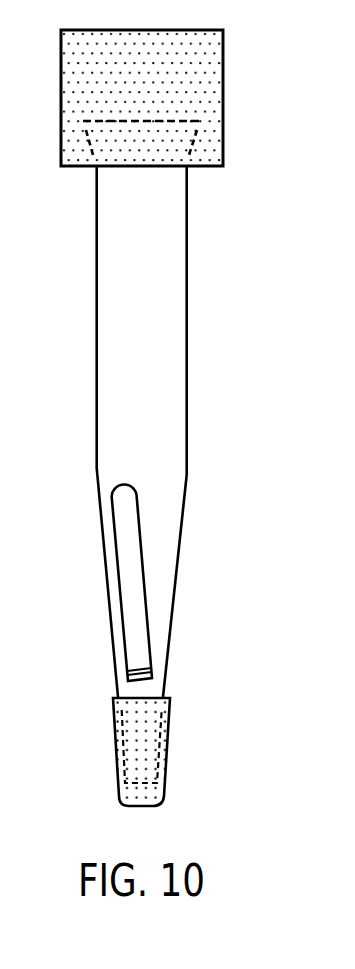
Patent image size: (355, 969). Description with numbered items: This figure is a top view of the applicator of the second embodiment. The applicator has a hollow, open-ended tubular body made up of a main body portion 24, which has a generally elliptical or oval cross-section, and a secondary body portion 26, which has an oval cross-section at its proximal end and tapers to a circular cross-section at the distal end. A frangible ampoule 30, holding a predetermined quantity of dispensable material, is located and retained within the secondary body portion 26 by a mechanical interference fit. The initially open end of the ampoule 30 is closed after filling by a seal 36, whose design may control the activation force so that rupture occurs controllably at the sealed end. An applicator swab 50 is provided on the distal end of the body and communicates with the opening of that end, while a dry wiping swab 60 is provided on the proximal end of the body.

The main body portion 24 is at (96, 306).
The secondary body portion 26 is at (104, 568).
The frangible ampoule 30 is at (148, 615).
The seal 36 is at (152, 668).
The applicator swab 50 is at (170, 757).
The dry wiping swab 60 is at (223, 120).